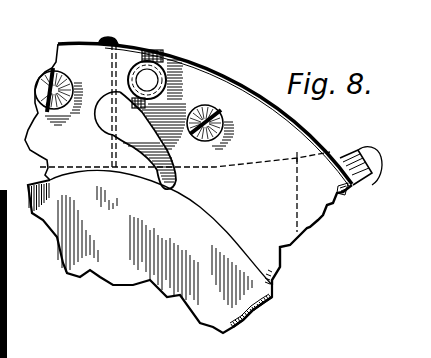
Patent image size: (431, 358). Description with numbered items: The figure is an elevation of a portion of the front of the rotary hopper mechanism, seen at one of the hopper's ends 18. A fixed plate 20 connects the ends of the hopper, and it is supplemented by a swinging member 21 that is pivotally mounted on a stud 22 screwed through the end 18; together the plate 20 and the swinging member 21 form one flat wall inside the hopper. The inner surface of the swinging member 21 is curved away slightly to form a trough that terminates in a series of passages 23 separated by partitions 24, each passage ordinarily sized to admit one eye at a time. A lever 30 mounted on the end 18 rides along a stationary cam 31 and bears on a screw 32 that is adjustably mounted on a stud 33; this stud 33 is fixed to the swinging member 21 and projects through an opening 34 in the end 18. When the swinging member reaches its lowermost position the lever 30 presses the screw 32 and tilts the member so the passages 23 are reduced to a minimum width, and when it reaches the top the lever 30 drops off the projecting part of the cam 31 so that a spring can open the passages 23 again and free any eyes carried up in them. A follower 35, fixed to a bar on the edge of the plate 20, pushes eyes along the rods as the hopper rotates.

The end 18 is at (204, 79).
The plate 20 is at (47, 160).
The swinging member 21 is at (240, 167).
The stud 22 is at (208, 106).
The passage 23 is at (332, 153).
The partition 24 is at (298, 153).
The lever 30 is at (102, 125).
The stationary cam 31 is at (253, 310).
The screw 32 is at (167, 113).
The stud 33 is at (133, 60).
The opening 34 is at (125, 85).
The follower 35 is at (372, 185).